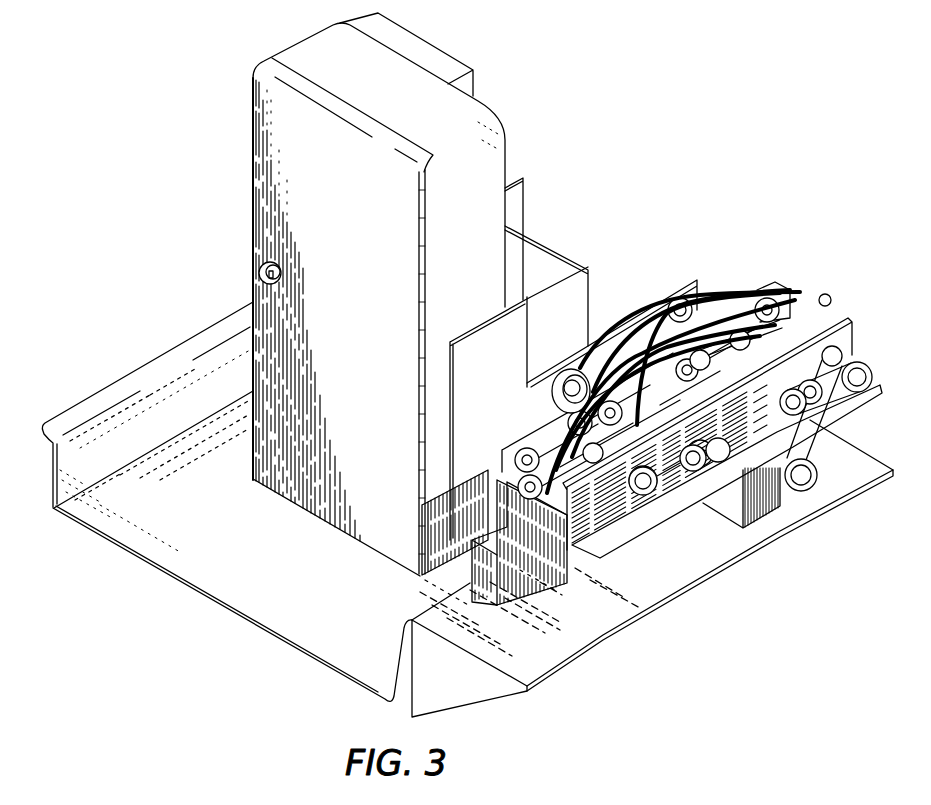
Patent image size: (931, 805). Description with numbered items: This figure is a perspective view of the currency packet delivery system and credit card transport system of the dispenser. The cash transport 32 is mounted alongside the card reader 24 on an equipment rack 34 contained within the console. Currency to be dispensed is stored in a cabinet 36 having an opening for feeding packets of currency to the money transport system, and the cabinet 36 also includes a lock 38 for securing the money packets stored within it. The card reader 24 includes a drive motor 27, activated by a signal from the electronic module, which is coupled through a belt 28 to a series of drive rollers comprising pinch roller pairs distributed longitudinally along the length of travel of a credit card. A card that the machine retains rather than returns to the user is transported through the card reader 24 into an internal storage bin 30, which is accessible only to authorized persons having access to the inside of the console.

The card reader 24 is at (853, 317).
The drive motor 27 is at (787, 500).
The belt 28 is at (830, 425).
The internal storage bin 30 is at (558, 563).
The cash transport 32 is at (242, 233).
The equipment rack 34 is at (470, 672).
The cabinet 36 is at (292, 48).
The lock 38 is at (258, 270).